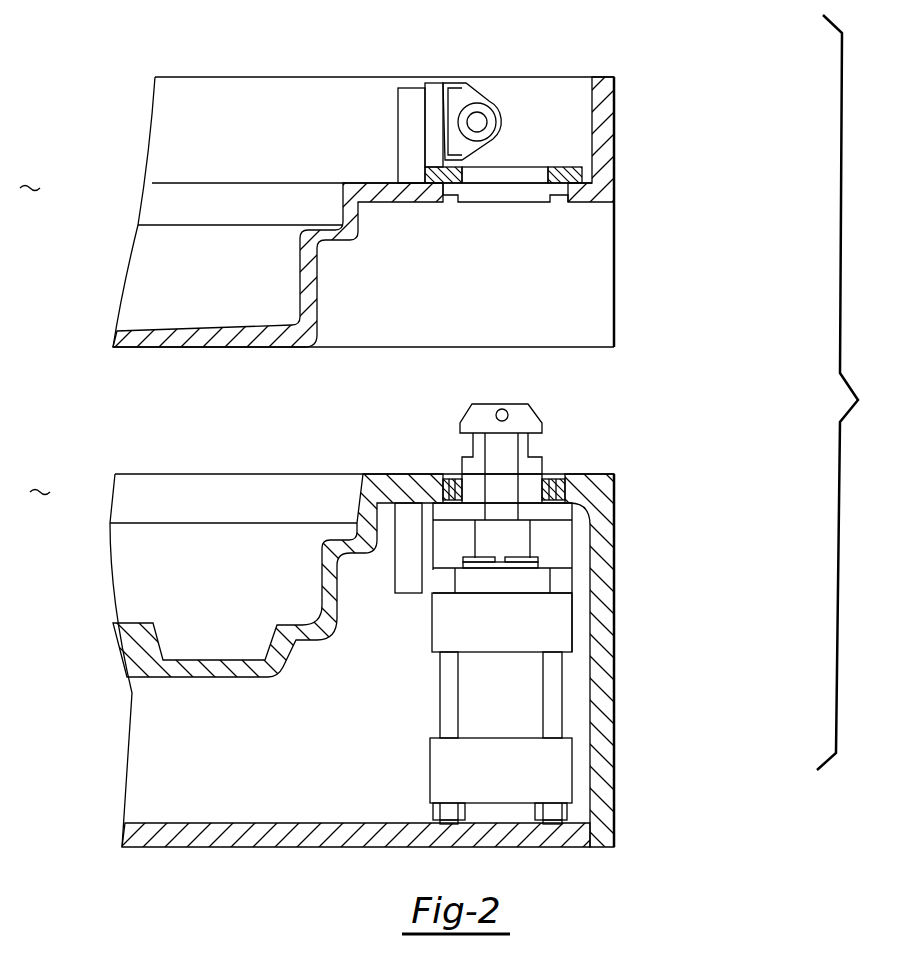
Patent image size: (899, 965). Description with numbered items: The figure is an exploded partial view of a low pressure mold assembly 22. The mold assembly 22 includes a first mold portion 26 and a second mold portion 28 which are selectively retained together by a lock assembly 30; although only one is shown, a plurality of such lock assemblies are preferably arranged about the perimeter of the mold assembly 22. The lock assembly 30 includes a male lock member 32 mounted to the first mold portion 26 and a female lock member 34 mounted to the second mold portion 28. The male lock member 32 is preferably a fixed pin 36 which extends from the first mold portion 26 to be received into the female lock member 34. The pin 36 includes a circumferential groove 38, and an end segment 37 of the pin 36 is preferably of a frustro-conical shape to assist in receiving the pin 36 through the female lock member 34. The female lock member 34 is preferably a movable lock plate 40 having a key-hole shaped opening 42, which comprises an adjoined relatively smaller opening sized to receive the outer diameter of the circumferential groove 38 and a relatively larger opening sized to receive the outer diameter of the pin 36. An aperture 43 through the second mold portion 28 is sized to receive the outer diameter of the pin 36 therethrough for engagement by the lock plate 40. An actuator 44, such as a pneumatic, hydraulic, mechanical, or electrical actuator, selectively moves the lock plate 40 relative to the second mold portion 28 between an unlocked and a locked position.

The mold assembly 22 is at (732, 71).
The first mold portion 26 is at (206, 581).
The second mold portion 28 is at (198, 275).
The lock assembly 30 is at (603, 567).
The male lock member 32 is at (560, 537).
The female lock member 34 is at (549, 102).
The pin 36 is at (530, 476).
The end segment 37 is at (542, 411).
The circumferential groove 38 is at (472, 463).
The lock plate 40 is at (588, 175).
The key-hole shaped opening 42 is at (513, 178).
The aperture 43 is at (562, 495).
The actuator 44 is at (477, 114).